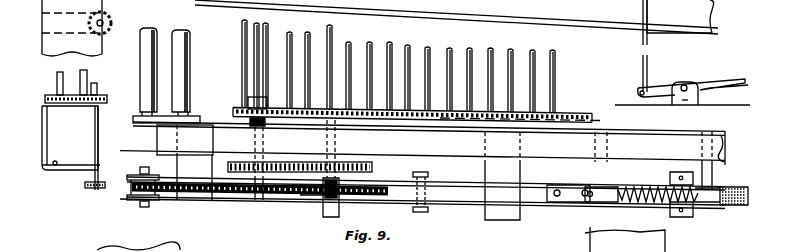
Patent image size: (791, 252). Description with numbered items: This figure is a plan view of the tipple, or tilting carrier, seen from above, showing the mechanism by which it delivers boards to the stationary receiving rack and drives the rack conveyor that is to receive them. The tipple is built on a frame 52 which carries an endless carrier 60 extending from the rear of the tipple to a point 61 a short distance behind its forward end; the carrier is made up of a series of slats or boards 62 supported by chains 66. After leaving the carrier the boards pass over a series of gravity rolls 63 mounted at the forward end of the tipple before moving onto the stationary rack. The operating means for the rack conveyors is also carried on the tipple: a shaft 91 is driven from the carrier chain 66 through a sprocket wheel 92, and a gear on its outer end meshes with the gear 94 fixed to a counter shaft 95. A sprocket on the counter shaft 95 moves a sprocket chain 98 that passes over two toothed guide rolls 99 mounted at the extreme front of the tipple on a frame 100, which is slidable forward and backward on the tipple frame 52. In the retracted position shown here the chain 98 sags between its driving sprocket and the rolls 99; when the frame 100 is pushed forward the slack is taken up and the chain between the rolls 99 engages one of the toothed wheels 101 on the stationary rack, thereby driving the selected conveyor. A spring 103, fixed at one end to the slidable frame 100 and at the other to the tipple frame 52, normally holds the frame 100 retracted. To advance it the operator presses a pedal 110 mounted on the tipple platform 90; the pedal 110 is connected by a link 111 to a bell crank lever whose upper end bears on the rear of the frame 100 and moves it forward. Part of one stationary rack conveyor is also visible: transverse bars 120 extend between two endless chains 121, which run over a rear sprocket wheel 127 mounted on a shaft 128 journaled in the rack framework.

The frame 52 is at (422, 165).
The endless carrier 60 is at (556, 111).
The point 61 is at (247, 94).
The slats or boards 62 is at (306, 34).
The gravity rolls 63 is at (177, 34).
The chains 66 is at (452, 114).
The tipple platform 90 is at (718, 108).
The shaft 91 is at (250, 128).
The sprocket wheel 92 is at (263, 130).
The gear 94 is at (373, 165).
The counter shaft 95 is at (340, 130).
The sprocket chain 98 is at (306, 196).
The toothed guide rolls 99 is at (130, 188).
The frame 100 is at (260, 203).
The toothed wheels 101 is at (84, 185).
The spring 103 is at (658, 202).
The pedal 110 is at (703, 80).
The link 111 is at (648, 64).
The transverse supporting members or bars 120 is at (87, 75).
The endless chains 121 is at (56, 76).
The rear sprocket wheel 127 is at (96, 89).
The shaft 128 is at (98, 137).